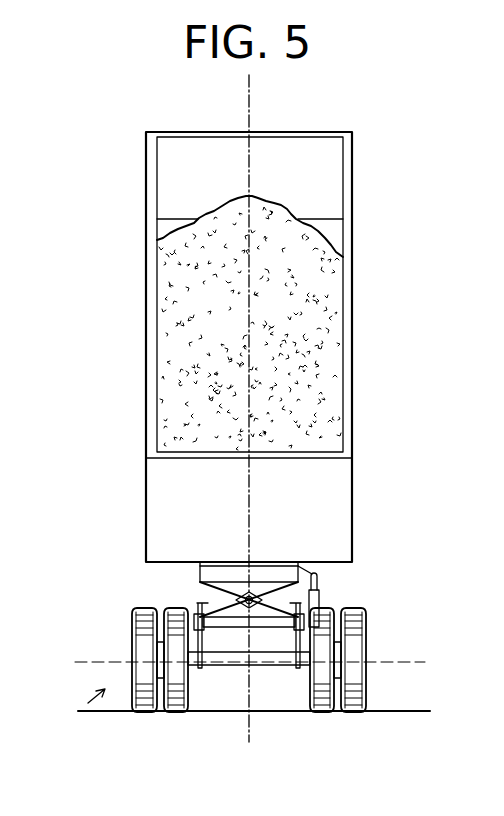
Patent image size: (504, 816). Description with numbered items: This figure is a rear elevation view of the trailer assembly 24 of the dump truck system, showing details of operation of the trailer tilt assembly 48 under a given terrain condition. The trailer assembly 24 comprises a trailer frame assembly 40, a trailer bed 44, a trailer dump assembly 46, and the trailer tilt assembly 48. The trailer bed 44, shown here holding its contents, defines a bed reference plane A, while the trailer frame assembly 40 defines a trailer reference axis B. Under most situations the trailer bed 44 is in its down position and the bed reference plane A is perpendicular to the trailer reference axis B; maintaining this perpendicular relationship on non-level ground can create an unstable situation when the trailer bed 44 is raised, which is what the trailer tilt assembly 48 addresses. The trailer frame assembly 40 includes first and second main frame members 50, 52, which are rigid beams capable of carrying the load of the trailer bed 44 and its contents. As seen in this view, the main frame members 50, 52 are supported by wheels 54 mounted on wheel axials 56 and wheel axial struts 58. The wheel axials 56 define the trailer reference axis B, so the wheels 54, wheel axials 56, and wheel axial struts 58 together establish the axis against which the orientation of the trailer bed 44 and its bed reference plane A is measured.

The trailer assembly 24 is at (247, 445).
The trailer bed 44 is at (355, 170).
The trailer dump assembly 46 is at (349, 573).
The trailer tilt assembly 48 is at (249, 584).
The first main frame member 50 is at (202, 603).
The second main frame member 52 is at (320, 594).
The wheels 54 is at (180, 657).
The wheel axials 56 is at (215, 662).
The wheel axial struts 58 is at (203, 643).
The trailer frame assembly 40 is at (88, 712).
The bed reference plane A is at (250, 117).
The trailer reference axis B is at (92, 662).